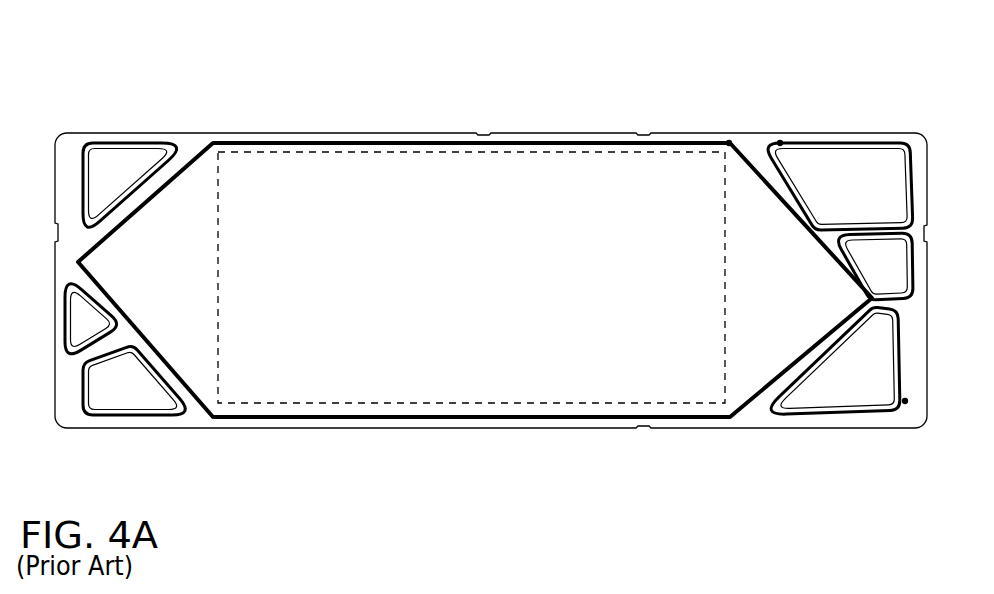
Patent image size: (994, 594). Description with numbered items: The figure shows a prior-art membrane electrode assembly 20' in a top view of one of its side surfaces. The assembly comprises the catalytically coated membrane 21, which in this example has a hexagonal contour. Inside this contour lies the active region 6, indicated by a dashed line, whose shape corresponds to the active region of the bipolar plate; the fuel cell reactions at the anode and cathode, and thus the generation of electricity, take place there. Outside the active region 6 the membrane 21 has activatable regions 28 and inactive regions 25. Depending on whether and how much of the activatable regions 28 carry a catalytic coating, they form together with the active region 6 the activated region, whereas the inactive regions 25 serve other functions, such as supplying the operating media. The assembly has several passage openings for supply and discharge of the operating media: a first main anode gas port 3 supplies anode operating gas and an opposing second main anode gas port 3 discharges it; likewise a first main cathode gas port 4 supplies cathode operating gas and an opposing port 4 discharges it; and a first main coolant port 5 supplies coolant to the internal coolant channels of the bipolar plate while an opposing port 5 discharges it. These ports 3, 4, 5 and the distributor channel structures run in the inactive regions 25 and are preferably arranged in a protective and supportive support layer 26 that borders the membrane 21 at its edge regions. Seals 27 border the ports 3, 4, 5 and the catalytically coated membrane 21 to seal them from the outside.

The membrane electrode assembly 20' is at (491, 214).
The catalytically coated membrane 21 is at (387, 190).
The active region 6 is at (471, 277).
The inactive regions 25 is at (475, 280).
The activatable regions 28 is at (475, 280).
The seals 27 is at (780, 143).
The support layer 26 is at (905, 401).
The main anode gas port 3 is at (489, 293).
The main cathode gas port 4 is at (491, 278).
The main coolant port 5 is at (498, 279).